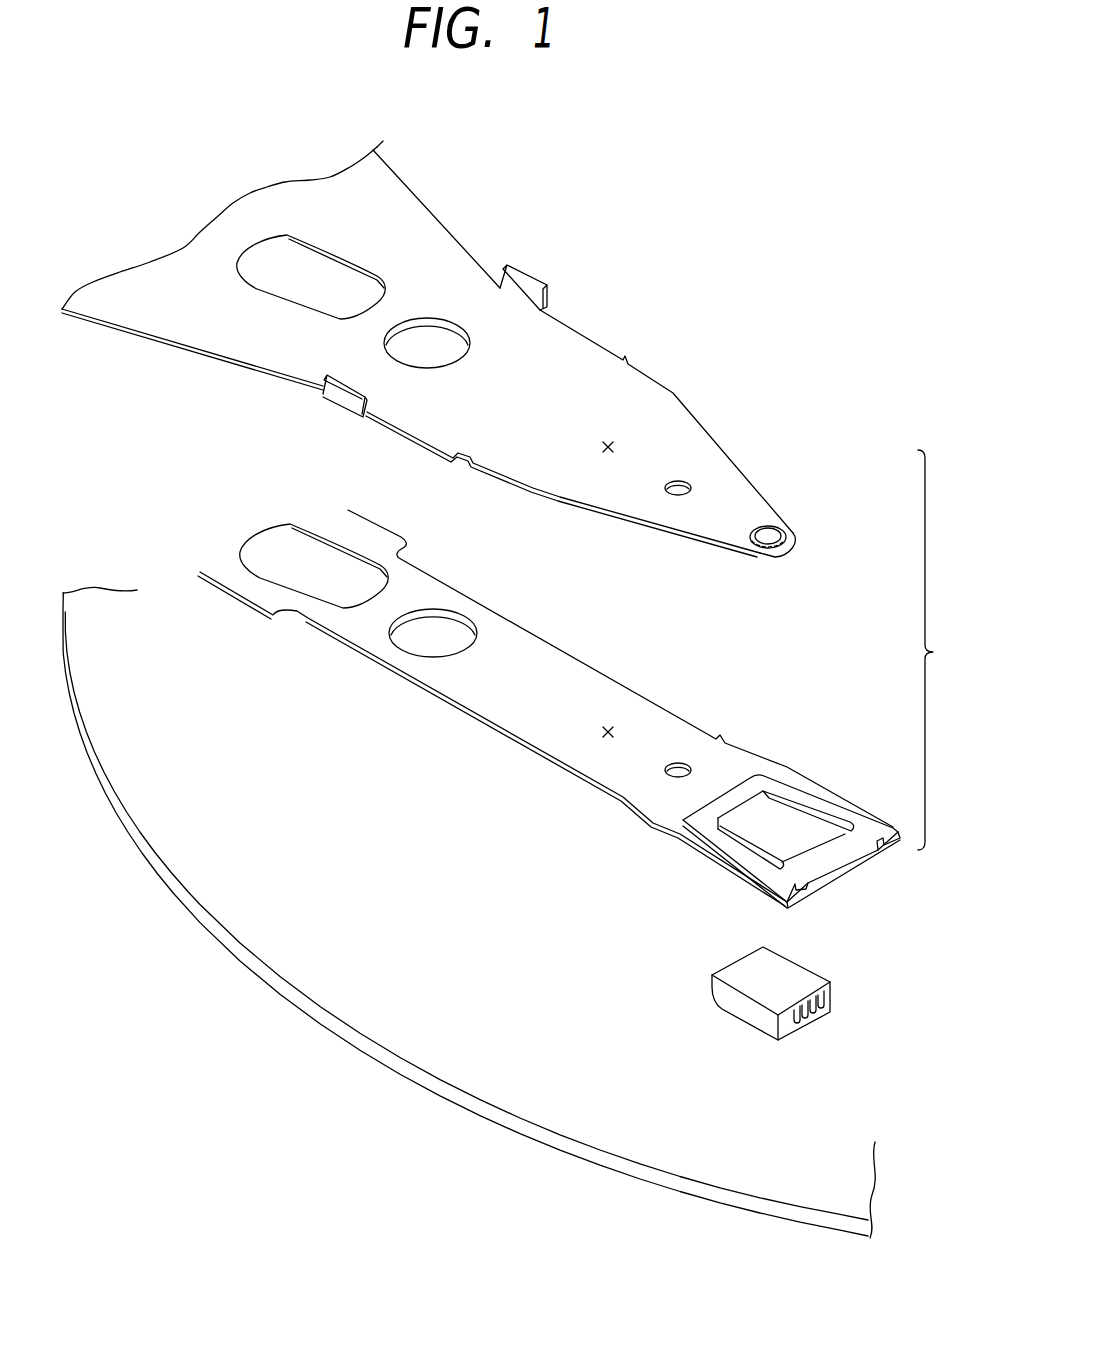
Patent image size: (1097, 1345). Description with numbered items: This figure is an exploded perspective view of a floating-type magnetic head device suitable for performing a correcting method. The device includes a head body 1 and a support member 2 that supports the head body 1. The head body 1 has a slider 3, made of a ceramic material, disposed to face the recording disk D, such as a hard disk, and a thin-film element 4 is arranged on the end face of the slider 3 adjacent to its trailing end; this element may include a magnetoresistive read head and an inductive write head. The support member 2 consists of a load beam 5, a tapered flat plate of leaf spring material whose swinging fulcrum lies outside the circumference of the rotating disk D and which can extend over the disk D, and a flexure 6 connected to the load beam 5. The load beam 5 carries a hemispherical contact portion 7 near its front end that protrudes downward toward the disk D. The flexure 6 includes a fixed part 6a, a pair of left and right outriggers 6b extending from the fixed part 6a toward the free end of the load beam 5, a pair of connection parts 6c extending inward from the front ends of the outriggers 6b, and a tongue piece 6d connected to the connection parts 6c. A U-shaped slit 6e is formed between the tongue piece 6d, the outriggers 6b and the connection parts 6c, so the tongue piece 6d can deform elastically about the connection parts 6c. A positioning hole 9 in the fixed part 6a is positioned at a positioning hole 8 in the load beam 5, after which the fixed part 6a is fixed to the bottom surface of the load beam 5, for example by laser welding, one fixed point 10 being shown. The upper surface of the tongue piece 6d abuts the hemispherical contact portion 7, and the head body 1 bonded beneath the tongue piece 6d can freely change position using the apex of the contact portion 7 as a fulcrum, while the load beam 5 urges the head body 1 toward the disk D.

The head body 1 is at (735, 1029).
The support member 2 is at (936, 650).
The slider 3 is at (758, 997).
The thin-film element 4 is at (786, 1028).
The load beam 5 is at (758, 472).
The flexure 6 is at (557, 722).
The fixed part 6a is at (555, 678).
The outriggers 6b is at (788, 768).
The connection parts 6c is at (880, 848).
The tongue piece 6d is at (765, 818).
The U-shaped slit 6e is at (815, 808).
The hemispherical contact portion 7 is at (770, 560).
The positioning hole 8 is at (679, 487).
The positioning hole 9 is at (679, 765).
The fixed point 10 is at (608, 445).
The recording disk D is at (626, 1135).